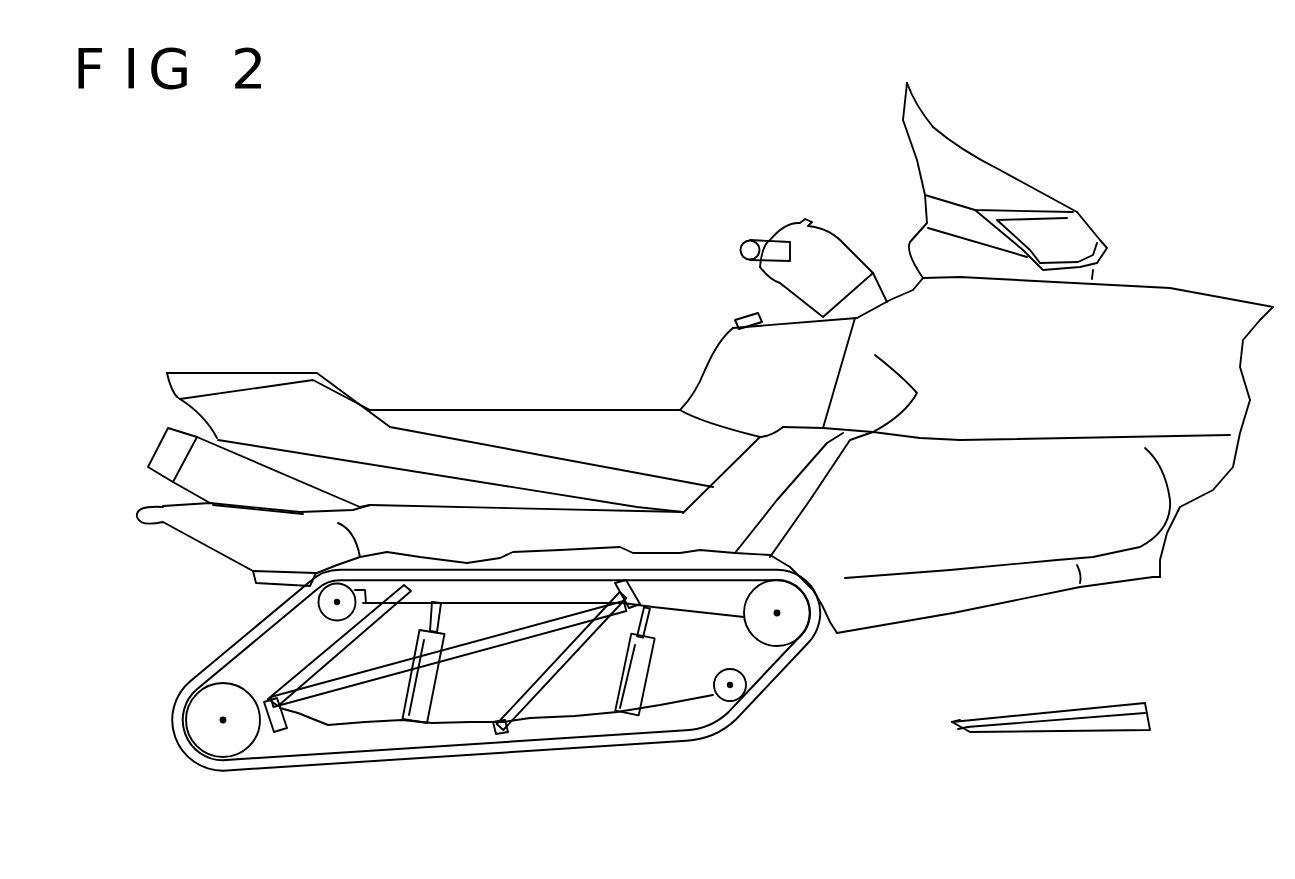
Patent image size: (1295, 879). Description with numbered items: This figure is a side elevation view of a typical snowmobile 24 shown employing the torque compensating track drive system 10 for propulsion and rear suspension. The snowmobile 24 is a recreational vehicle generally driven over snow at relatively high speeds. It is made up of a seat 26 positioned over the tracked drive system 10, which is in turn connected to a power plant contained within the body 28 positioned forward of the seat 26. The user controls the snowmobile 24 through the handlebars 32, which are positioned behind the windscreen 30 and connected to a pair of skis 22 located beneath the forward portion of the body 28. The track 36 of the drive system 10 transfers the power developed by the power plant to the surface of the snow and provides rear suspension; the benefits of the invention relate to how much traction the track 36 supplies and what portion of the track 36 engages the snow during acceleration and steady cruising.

The torque compensating track drive system 10 is at (738, 754).
The skis 22 is at (958, 740).
The snowmobile 24 is at (603, 360).
The seat 26 is at (502, 407).
The body 28 is at (1172, 288).
The windscreen 30 is at (912, 148).
The handlebars 32 is at (743, 242).
The track 36 is at (580, 747).